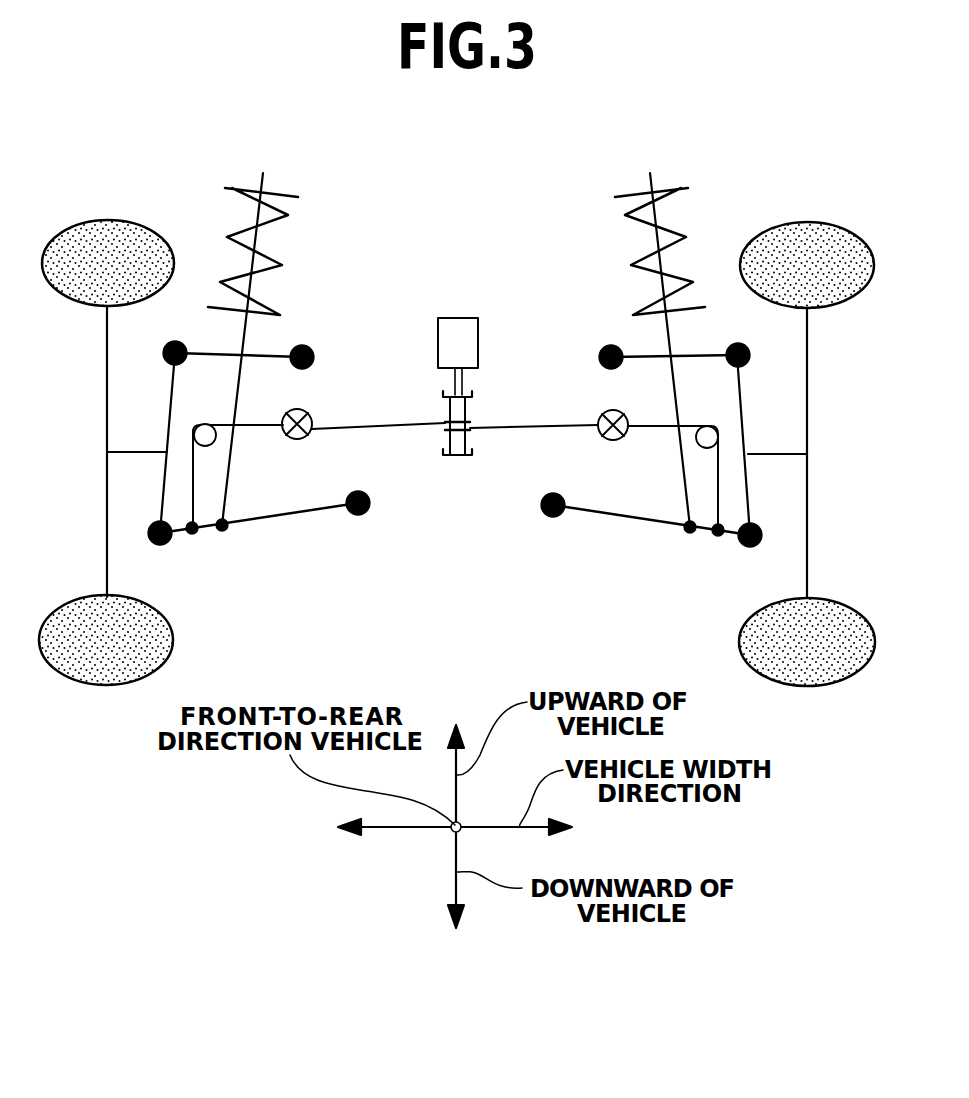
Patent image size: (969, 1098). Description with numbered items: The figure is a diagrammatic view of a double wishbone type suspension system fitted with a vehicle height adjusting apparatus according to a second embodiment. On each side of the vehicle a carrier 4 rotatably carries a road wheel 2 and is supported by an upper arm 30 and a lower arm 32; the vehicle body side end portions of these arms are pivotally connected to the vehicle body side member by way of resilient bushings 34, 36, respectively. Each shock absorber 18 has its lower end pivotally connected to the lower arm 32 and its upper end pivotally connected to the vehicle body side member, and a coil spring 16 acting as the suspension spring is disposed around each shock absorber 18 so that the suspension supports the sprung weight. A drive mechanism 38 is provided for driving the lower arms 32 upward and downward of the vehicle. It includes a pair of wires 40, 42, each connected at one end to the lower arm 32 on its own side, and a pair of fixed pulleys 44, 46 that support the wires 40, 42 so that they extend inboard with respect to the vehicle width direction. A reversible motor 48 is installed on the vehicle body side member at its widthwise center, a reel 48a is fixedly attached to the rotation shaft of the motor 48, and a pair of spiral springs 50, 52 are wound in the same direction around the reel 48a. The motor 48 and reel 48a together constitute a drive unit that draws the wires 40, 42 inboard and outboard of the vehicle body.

The road wheel 2 is at (95, 670).
The carrier 4 is at (167, 400).
The coil spring 16 is at (237, 228).
The shock absorber 18 is at (265, 237).
The upper arm 30 is at (270, 353).
The lower arm 32 is at (285, 518).
The resilient bushing 34 is at (305, 345).
The resilient bushing 36 is at (367, 517).
The drive mechanism 38 is at (432, 341).
The wire 40 is at (193, 480).
The wire 42 is at (720, 485).
The fixed pulley 44 is at (207, 441).
The fixed pulley 46 is at (702, 442).
The reversible motor 48 is at (465, 327).
The reel 48a is at (453, 442).
The spiral spring 50 is at (375, 420).
The spiral spring 52 is at (533, 420).